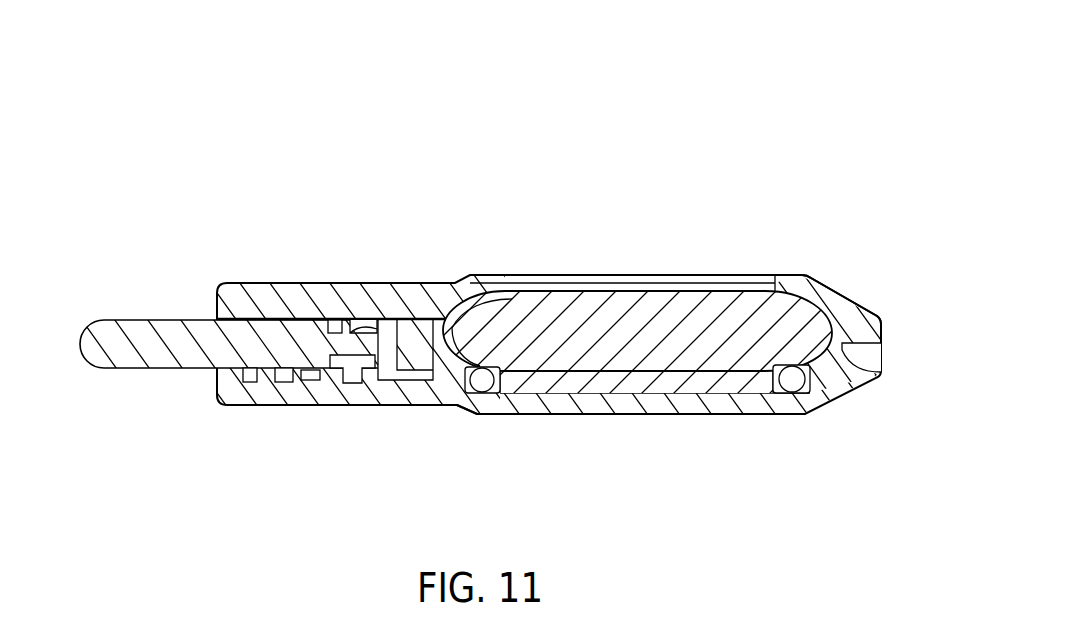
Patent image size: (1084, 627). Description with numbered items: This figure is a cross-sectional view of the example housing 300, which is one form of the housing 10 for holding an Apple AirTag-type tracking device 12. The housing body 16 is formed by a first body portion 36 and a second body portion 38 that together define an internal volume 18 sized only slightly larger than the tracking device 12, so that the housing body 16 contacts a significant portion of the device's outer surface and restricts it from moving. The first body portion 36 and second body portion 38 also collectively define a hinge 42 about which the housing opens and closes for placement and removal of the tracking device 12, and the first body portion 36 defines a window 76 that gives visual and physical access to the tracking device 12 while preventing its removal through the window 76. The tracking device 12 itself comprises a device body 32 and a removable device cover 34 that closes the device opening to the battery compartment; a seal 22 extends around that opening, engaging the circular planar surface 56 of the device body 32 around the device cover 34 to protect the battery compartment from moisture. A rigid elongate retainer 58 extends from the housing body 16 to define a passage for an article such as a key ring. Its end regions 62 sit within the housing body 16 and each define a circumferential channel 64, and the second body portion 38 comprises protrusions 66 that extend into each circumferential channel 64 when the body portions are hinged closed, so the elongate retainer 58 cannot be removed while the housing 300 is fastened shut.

The housing 10 is at (829, 68).
The housing 300 is at (820, 103).
The tracking device 12 is at (577, 396).
The housing body 16 is at (665, 272).
The internal volume 18 is at (857, 292).
The seal 22 is at (520, 383).
The device body 32 is at (578, 290).
The device cover 34 is at (660, 396).
The first body portion 36 is at (732, 275).
The second body portion 38 is at (692, 417).
The hinge 42 is at (884, 338).
The circular planar surface 56 is at (785, 395).
The elongate retainer 58 is at (130, 318).
The end regions 62 is at (357, 306).
The circumferential channel 64 is at (338, 317).
The protrusions 66 is at (322, 373).
The window 76 is at (507, 290).